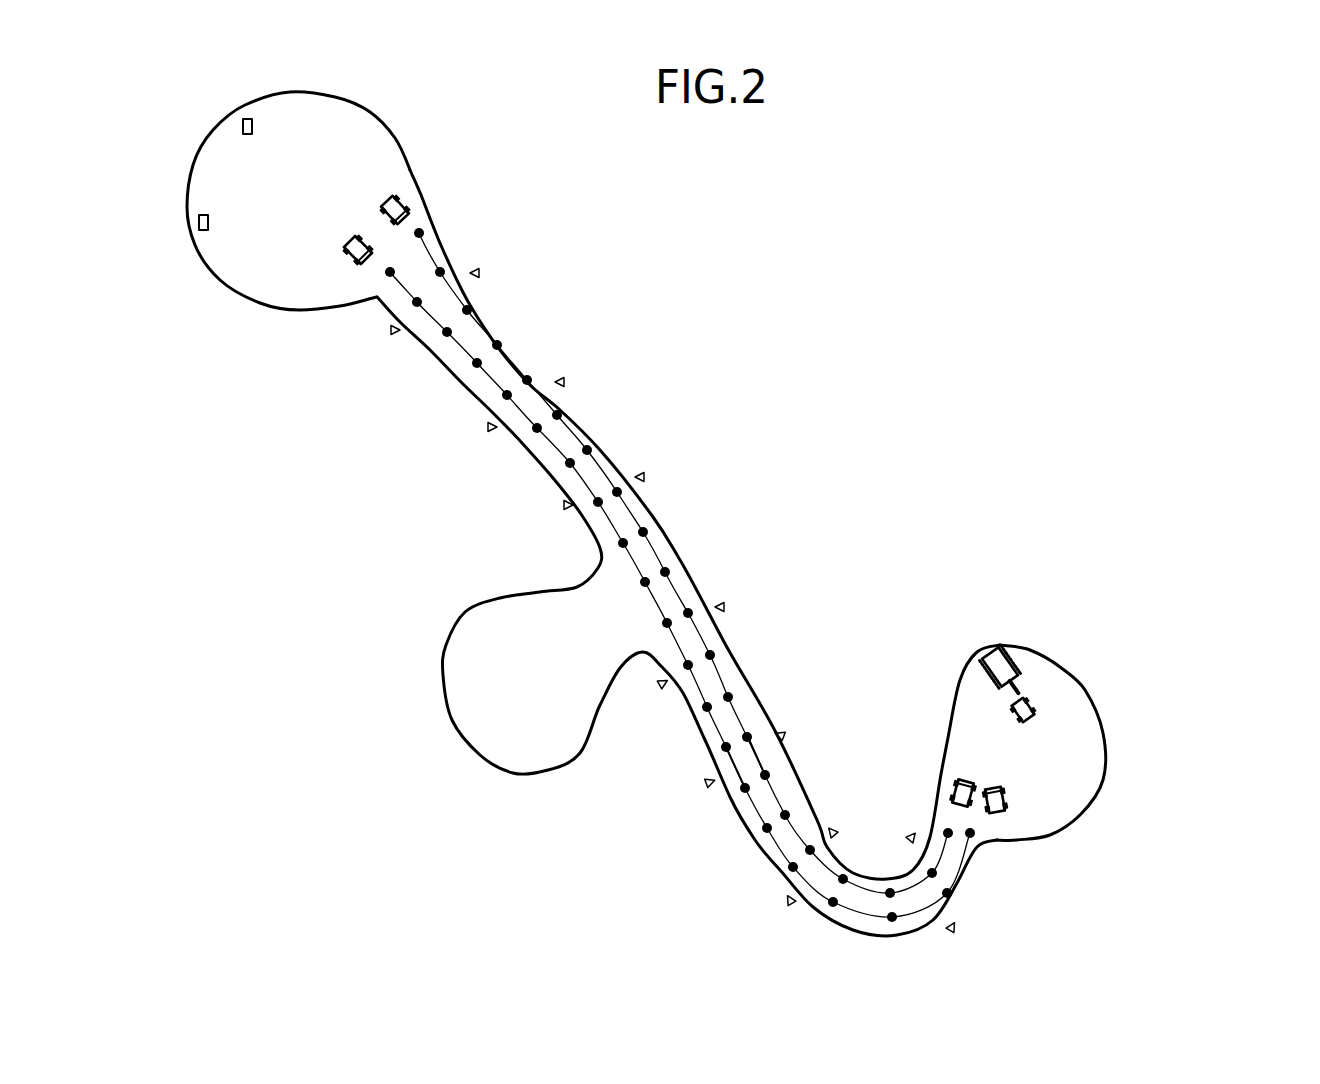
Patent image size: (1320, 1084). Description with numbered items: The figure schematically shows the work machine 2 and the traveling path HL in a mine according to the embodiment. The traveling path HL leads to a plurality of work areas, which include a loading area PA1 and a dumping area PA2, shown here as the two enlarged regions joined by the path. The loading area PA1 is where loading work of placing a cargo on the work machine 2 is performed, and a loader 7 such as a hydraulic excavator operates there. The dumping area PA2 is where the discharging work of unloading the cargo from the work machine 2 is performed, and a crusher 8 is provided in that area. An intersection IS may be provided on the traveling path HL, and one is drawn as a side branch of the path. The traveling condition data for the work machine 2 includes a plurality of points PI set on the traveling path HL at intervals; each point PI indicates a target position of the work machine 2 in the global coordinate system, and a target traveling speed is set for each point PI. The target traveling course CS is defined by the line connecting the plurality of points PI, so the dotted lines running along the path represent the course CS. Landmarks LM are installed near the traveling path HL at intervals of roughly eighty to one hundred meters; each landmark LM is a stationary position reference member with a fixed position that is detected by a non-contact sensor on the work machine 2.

The work machine 2 is at (402, 198).
The loader 7 is at (997, 650).
The crusher 8 is at (245, 118).
The landmark LM is at (483, 273).
The point PI is at (562, 414).
The target traveling course CS is at (759, 764).
The intersection IS is at (643, 655).
The traveling path HL is at (783, 875).
The loading area PA1 is at (1073, 781).
The dumping area PA2 is at (343, 182).